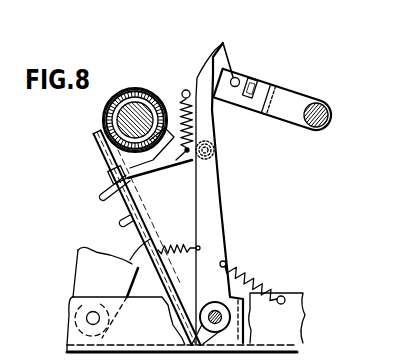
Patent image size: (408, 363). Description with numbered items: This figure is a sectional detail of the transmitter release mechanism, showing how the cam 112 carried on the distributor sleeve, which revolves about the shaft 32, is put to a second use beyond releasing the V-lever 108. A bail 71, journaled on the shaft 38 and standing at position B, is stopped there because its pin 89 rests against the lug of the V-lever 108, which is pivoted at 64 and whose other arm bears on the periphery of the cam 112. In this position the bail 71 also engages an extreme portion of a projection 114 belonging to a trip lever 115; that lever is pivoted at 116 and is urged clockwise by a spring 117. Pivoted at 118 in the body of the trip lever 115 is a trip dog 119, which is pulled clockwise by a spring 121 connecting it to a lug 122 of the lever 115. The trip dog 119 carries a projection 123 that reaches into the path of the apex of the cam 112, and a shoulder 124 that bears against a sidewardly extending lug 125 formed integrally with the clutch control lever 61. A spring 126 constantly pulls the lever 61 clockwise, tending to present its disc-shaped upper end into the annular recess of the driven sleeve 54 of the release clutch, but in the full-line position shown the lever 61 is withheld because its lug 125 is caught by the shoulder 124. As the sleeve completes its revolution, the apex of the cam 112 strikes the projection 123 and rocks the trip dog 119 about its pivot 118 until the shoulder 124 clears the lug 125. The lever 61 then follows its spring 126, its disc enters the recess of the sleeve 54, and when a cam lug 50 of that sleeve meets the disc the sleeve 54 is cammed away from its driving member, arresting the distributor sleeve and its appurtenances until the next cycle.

The shaft 32 is at (112, 122).
The shaft 38 is at (328, 110).
The cam lug 50 is at (105, 107).
The driven sleeve 54 is at (132, 90).
The clutch control lever 61 is at (99, 146).
The pivot 64 is at (85, 318).
The bail 71 is at (293, 93).
The pin 89 is at (243, 79).
The V-lever 108 is at (85, 277).
The cam 112 is at (148, 89).
The projection 114 is at (225, 42).
The trip lever 115 is at (213, 190).
The pivot 116 is at (210, 318).
The spring 117 is at (247, 281).
The pivot 118 is at (212, 151).
The trip dog 119 is at (126, 284).
The spring 121 is at (193, 128).
The lug 122 is at (188, 90).
The projection 123 is at (112, 172).
The shoulder 124 is at (117, 206).
The lug 125 is at (103, 197).
The spring 126 is at (199, 247).
The position B is at (247, 56).